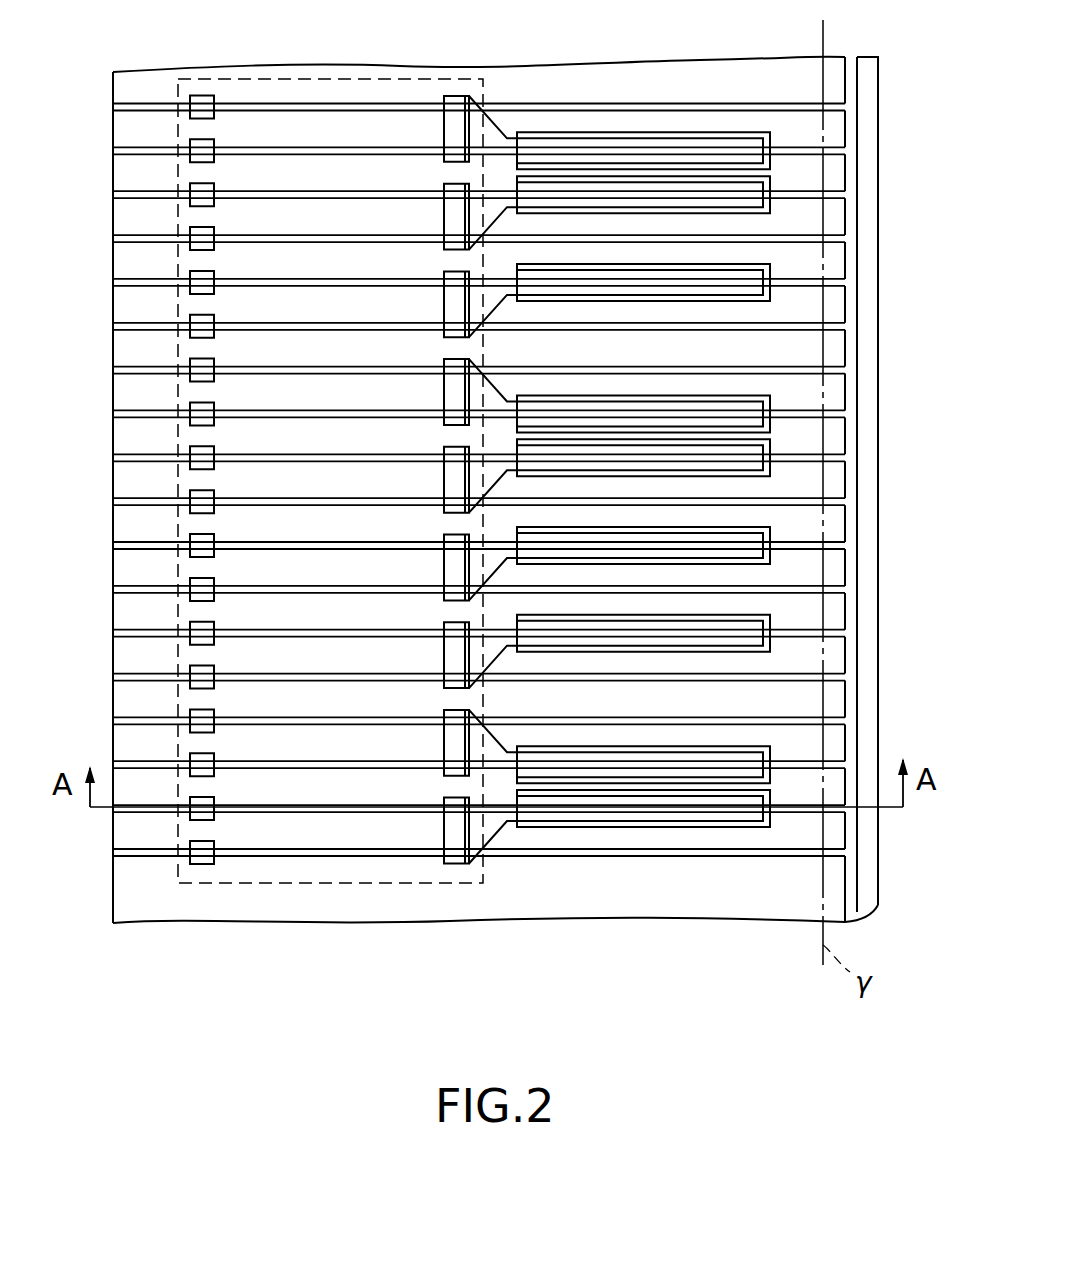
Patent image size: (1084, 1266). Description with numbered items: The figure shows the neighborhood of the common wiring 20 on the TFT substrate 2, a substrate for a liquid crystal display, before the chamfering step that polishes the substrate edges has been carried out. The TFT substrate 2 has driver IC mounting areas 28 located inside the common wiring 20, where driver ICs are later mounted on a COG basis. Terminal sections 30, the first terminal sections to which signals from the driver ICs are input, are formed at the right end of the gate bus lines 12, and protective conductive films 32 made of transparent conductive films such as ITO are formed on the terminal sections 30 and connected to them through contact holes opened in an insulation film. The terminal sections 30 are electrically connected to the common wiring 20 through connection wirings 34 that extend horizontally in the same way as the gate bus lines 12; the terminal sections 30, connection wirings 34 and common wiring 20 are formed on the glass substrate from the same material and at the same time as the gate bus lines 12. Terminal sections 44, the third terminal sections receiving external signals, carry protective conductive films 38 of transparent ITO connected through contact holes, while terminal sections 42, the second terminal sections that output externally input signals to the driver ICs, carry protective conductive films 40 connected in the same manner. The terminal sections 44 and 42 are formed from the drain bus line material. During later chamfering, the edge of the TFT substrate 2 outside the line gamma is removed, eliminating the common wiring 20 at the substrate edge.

The TFT substrate 2 is at (868, 363).
The gate bus lines 12 is at (137, 104).
The common wiring 20 is at (852, 70).
The driver IC mounting areas 28 is at (330, 883).
The terminal sections 30 is at (227, 432).
The protective conductive films 32 is at (208, 98).
The connection wirings 34 is at (558, 102).
The protective conductive films 38 is at (677, 131).
The protective conductive films 40 is at (471, 96).
The terminal sections 42 is at (450, 96).
The terminal sections 44 is at (618, 137).